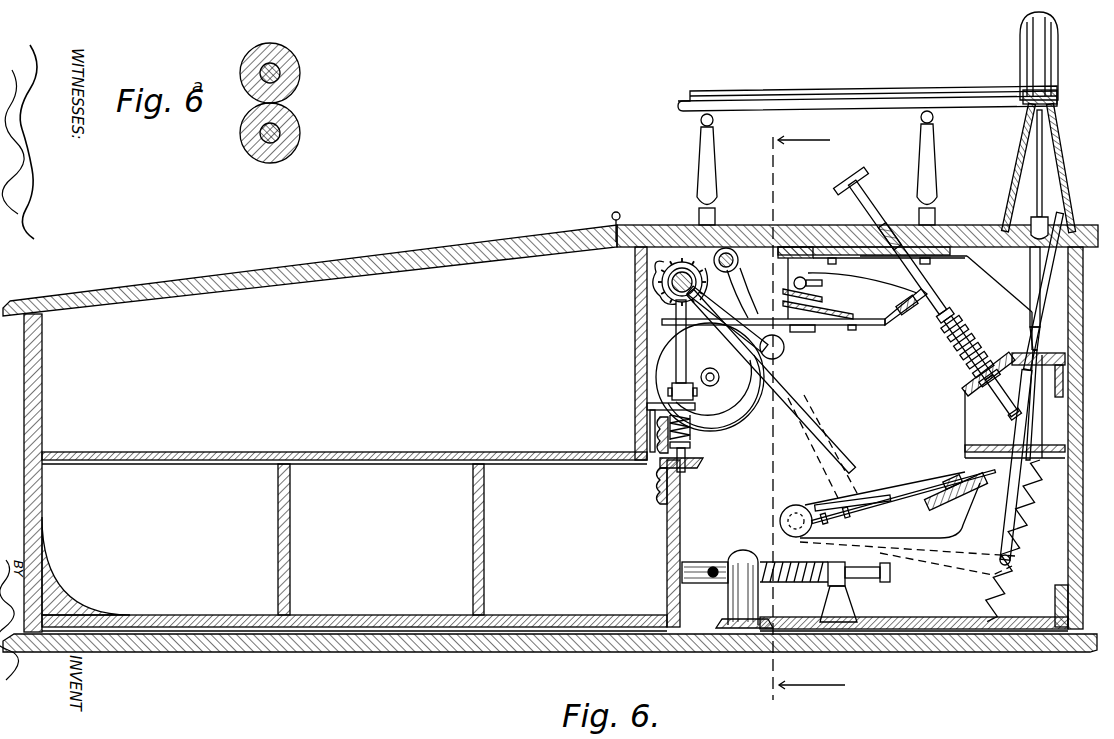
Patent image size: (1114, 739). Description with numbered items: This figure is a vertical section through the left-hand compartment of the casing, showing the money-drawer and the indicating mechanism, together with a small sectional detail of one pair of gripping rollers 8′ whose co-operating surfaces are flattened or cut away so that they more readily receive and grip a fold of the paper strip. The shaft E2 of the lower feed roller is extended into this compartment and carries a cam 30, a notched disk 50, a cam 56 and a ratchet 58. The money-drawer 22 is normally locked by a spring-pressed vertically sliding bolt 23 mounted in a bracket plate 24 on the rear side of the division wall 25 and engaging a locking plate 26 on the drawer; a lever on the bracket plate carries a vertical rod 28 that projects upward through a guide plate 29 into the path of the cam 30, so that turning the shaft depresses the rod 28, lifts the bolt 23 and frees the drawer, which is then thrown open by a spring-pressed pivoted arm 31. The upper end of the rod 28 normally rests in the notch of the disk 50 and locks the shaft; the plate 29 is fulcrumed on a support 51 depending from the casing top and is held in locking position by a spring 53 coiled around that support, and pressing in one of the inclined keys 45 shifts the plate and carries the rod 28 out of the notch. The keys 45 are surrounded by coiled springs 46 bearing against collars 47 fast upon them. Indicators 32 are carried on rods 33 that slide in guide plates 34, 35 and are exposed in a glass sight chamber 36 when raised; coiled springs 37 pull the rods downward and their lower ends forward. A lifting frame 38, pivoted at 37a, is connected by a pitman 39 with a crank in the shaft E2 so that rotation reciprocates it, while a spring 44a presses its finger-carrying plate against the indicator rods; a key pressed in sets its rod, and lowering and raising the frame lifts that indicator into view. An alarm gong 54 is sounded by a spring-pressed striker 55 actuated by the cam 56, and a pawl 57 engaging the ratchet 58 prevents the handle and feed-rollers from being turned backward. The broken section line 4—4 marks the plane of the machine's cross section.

In FIG. 6A, the gripping roller 8′ is at (302, 73).
In FIG. 6, the money-drawer 22 is at (344, 533).
In FIG. 6, the vertically sliding bolt 23 is at (691, 454).
In FIG. 6, the bracket plate 24 is at (694, 406).
In FIG. 6, the division wall 25 is at (646, 385).
In FIG. 6, the locking plate 26 is at (660, 463).
In FIG. 6, the vertical rod 28 is at (686, 356).
In FIG. 6, the guide plate 29 is at (663, 322).
In FIG. 6, the cam 30 is at (660, 284).
In FIG. 6, the spring-pressed pivoted arm 31 is at (715, 560).
In FIG. 6, the indicators 32 is at (1044, 202).
In FIG. 6, the indicator rods 33 is at (1032, 262).
In FIG. 6, the guide plate 34 is at (1013, 355).
In FIG. 6, the guide plate 35 is at (1000, 445).
In FIG. 6, the glass sight chamber 36 is at (1066, 152).
In FIG. 6, the coiled springs 37 is at (1028, 533).
In FIG. 6, the pivot of lifting frame 37a is at (796, 514).
In FIG. 6, the lifting frame 38 is at (898, 502).
In FIG. 6, the pitman 39 is at (830, 447).
In FIG. 6, the spring 44a is at (940, 496).
In FIG. 6, the keys 45 is at (874, 208).
In FIG. 6, the coiled springs 46 is at (968, 352).
In FIG. 6, the collars 47 is at (946, 316).
In FIG. 6, the notched disk 50 is at (714, 305).
In FIG. 6, the support 51 is at (810, 273).
In FIG. 6, the spring 53 is at (836, 312).
In FIG. 6, the alarm gong 54 is at (742, 418).
In FIG. 6, the spring-pressed striker 55 is at (742, 290).
In FIG. 6, the cam 56 is at (730, 272).
In FIG. 6, the pawl 57 is at (688, 260).
In FIG. 6, the ratchet 58 is at (672, 262).
In FIG. 6, the shaft of lower feed roller E2 is at (660, 274).
In FIG. 6, the section line 4— 4 is at (805, 420).